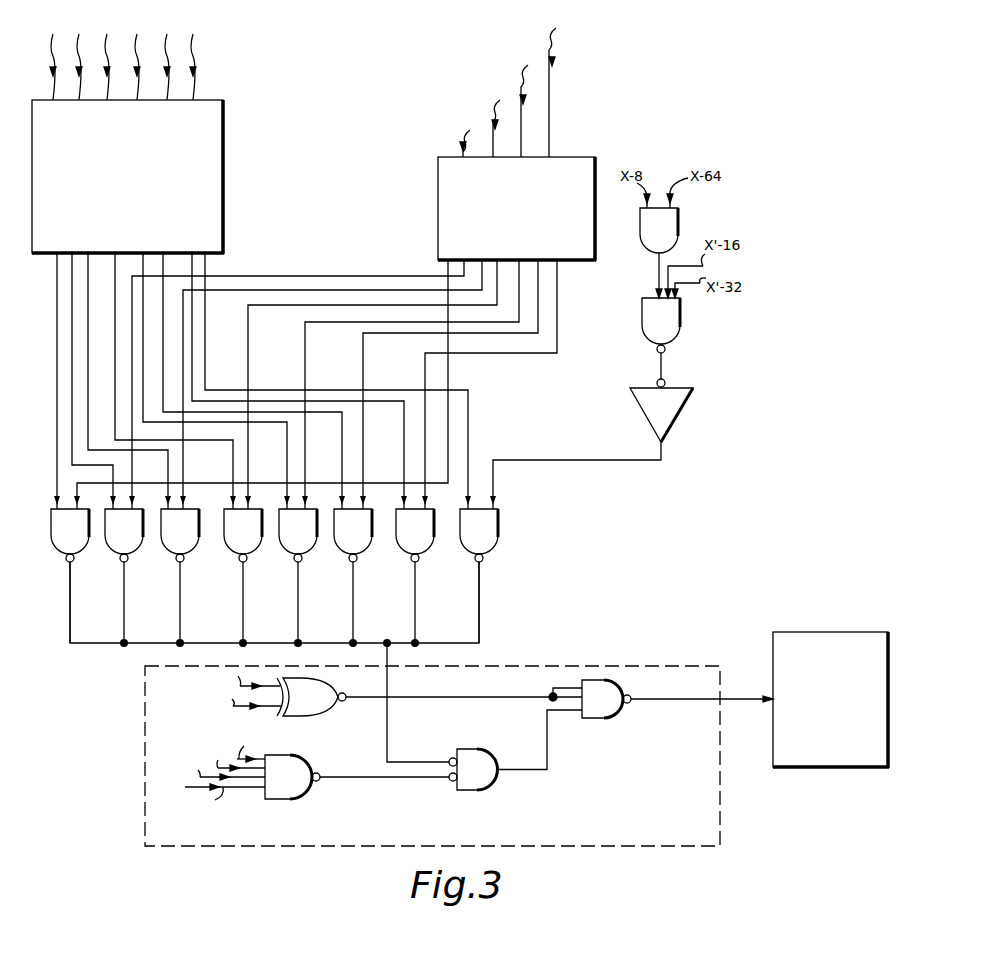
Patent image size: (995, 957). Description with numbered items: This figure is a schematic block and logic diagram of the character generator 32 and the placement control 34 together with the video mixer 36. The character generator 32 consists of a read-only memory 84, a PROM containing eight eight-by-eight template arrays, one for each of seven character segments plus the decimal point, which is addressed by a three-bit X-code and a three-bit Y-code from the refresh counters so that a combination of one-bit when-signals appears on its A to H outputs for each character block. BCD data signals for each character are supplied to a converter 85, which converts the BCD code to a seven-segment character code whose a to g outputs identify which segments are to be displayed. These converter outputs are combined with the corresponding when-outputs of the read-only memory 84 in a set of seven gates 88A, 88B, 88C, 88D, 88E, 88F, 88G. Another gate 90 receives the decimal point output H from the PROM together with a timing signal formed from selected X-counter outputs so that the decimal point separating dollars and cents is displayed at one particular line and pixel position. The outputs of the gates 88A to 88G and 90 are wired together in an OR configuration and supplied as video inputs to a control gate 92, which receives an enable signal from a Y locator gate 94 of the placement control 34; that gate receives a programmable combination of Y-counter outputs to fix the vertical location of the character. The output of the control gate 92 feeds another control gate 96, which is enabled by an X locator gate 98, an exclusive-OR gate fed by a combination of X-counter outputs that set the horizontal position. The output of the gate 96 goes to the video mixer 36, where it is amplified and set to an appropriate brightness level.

The read-only memory 84 is at (225, 172).
The converter 85 is at (438, 172).
The gate 88A is at (82, 549).
The gate 88B is at (136, 549).
The gate 88C is at (192, 549).
The gate 88D is at (255, 549).
The gate 88E is at (310, 549).
The gate 88F is at (365, 549).
The gate 88G is at (427, 549).
The gate 90 is at (498, 540).
The control gate 92 is at (490, 749).
The Y locator gate 94 is at (305, 790).
The control gate 96 is at (614, 718).
The X locator gate 98 is at (322, 710).
The character generator 32 is at (556, 535).
The placement control 34 is at (592, 666).
The video mixer 36 is at (773, 638).